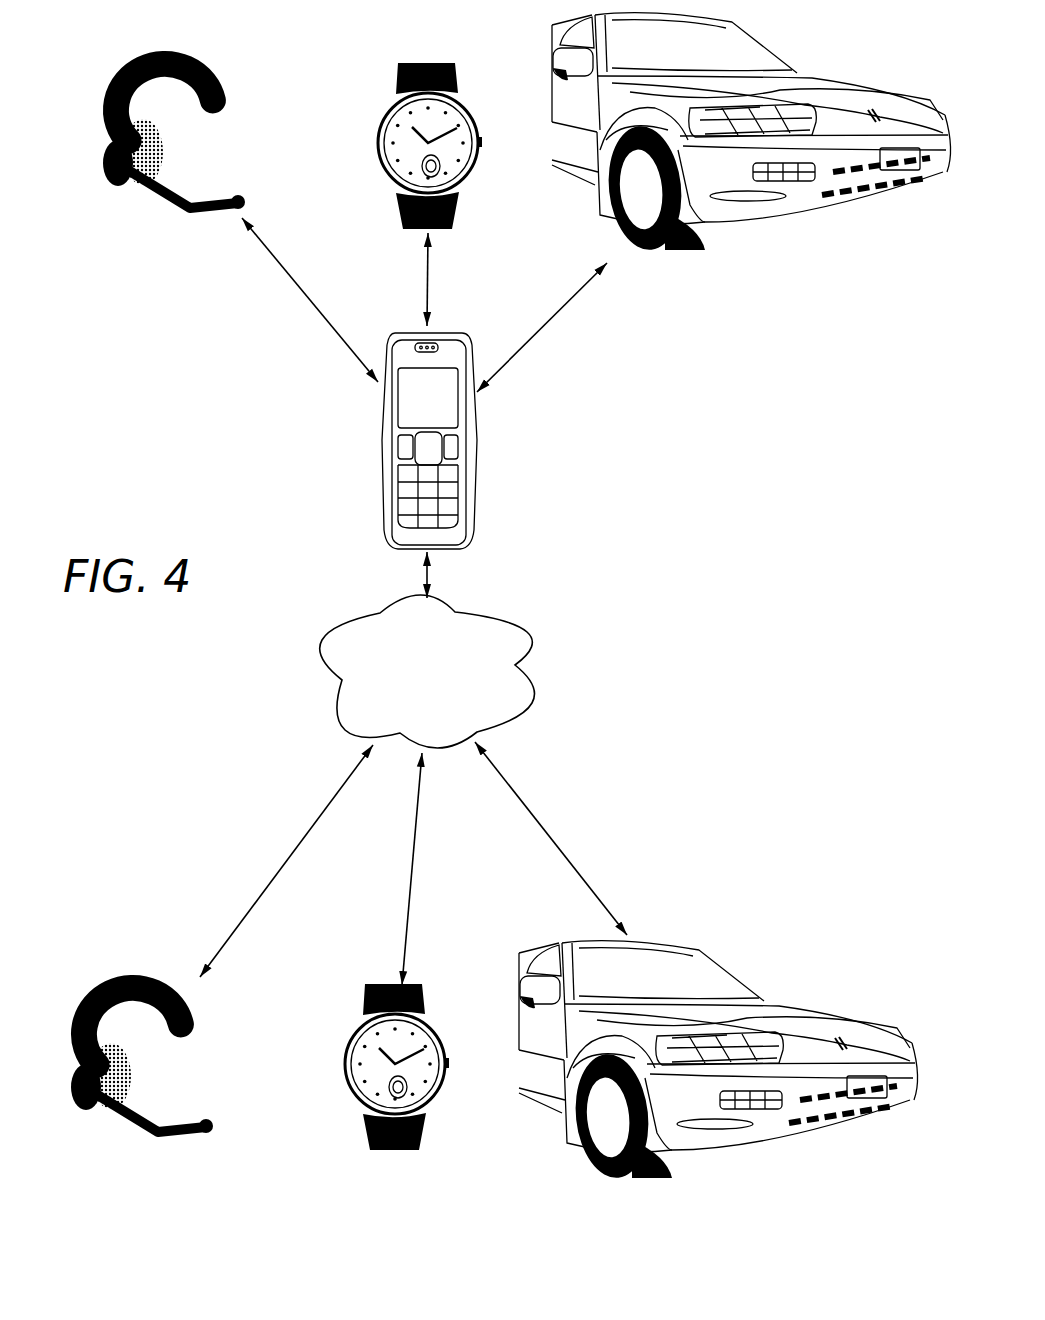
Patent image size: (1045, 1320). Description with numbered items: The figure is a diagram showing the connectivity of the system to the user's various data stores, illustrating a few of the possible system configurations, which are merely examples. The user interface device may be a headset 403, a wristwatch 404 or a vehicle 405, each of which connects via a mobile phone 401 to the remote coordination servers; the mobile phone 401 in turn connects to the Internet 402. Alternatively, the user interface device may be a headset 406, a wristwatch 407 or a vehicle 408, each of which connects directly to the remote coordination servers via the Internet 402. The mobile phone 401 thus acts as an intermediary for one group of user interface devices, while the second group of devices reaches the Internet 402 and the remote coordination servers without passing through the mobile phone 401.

The mobile phone 401 is at (444, 441).
The Internet 402 is at (441, 671).
The headset 403 is at (150, 123).
The wristwatch 404 is at (412, 133).
The vehicle 405 is at (751, 134).
The headset 406 is at (122, 1068).
The wristwatch 407 is at (370, 1067).
The vehicle 408 is at (718, 1061).